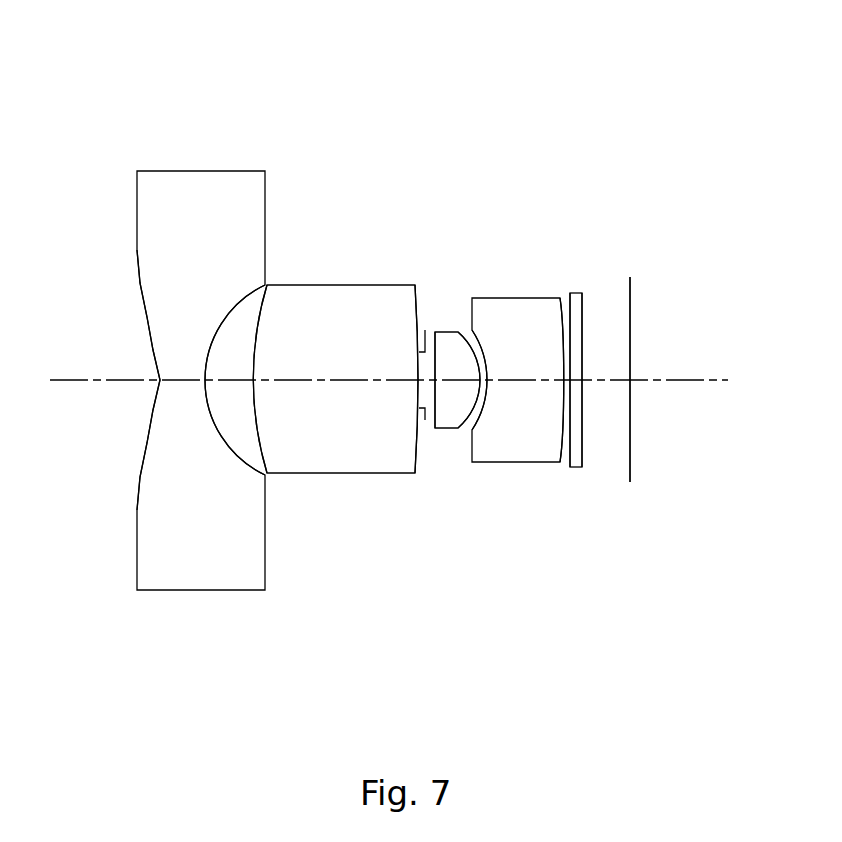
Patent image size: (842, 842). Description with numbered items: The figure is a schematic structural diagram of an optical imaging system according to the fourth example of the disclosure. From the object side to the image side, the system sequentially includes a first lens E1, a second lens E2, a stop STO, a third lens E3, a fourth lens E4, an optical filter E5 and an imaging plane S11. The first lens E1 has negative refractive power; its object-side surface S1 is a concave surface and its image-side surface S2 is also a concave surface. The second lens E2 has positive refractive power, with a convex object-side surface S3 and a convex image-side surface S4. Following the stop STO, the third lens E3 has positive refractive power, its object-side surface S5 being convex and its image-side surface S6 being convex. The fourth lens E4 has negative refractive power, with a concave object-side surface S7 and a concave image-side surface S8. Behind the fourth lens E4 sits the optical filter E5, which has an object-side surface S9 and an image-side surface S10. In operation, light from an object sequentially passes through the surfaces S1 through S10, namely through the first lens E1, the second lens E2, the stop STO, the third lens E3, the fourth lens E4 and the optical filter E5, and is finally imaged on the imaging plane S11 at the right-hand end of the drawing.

The first lens E1 is at (200, 171).
The second lens E2 is at (343, 285).
The stop STO is at (425, 352).
The third lens E3 is at (447, 332).
The fourth lens E4 is at (515, 298).
The optical filter E5 is at (577, 293).
The object-side surface of the first lens S1 is at (160, 380).
The image-side surface of the first lens S2 is at (205, 380).
The object-side surface of the second lens S3 is at (253, 380).
The image-side surface of the second lens S4 is at (418, 380).
The object-side surface of the third lens S5 is at (435, 380).
The image-side surface of the third lens S6 is at (480, 380).
The object-side surface of the fourth lens S7 is at (487, 380).
The image-side surface of the fourth lens S8 is at (562, 380).
The object-side surface of the optical filter S9 is at (571, 380).
The image-side surface of the optical filter S10 is at (582, 380).
The imaging plane S11 is at (630, 380).